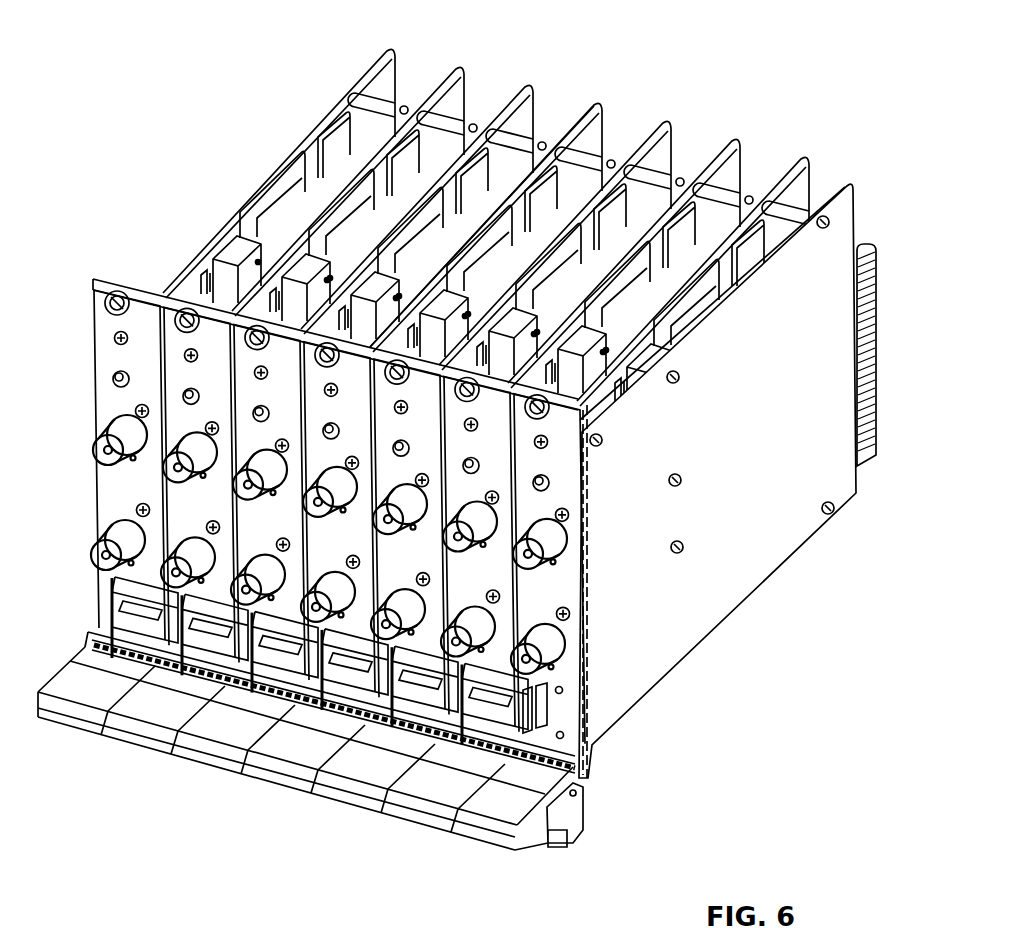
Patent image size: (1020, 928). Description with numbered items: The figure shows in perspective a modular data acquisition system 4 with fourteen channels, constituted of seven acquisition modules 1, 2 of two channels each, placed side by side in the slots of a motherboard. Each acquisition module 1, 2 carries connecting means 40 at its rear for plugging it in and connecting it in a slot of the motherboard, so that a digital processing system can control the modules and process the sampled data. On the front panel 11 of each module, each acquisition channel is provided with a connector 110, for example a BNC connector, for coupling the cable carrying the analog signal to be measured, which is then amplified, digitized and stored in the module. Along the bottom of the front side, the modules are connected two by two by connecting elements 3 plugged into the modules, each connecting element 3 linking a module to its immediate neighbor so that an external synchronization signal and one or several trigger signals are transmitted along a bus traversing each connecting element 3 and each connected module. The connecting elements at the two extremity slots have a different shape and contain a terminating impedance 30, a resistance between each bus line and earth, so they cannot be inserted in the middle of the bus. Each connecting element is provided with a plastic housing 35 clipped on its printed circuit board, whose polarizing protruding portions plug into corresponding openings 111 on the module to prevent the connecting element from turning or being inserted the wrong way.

The acquisition module 1 is at (534, 98).
The acquisition module 2 is at (600, 104).
The connecting element 3 is at (320, 661).
The modular data acquisition system 4 is at (88, 777).
The front panel 11 is at (150, 372).
The terminating impedance 30 is at (117, 581).
The plastic housing 35 is at (132, 625).
The connecting means 40 is at (880, 464).
The connector 110 is at (329, 529).
The openings 111 is at (580, 746).